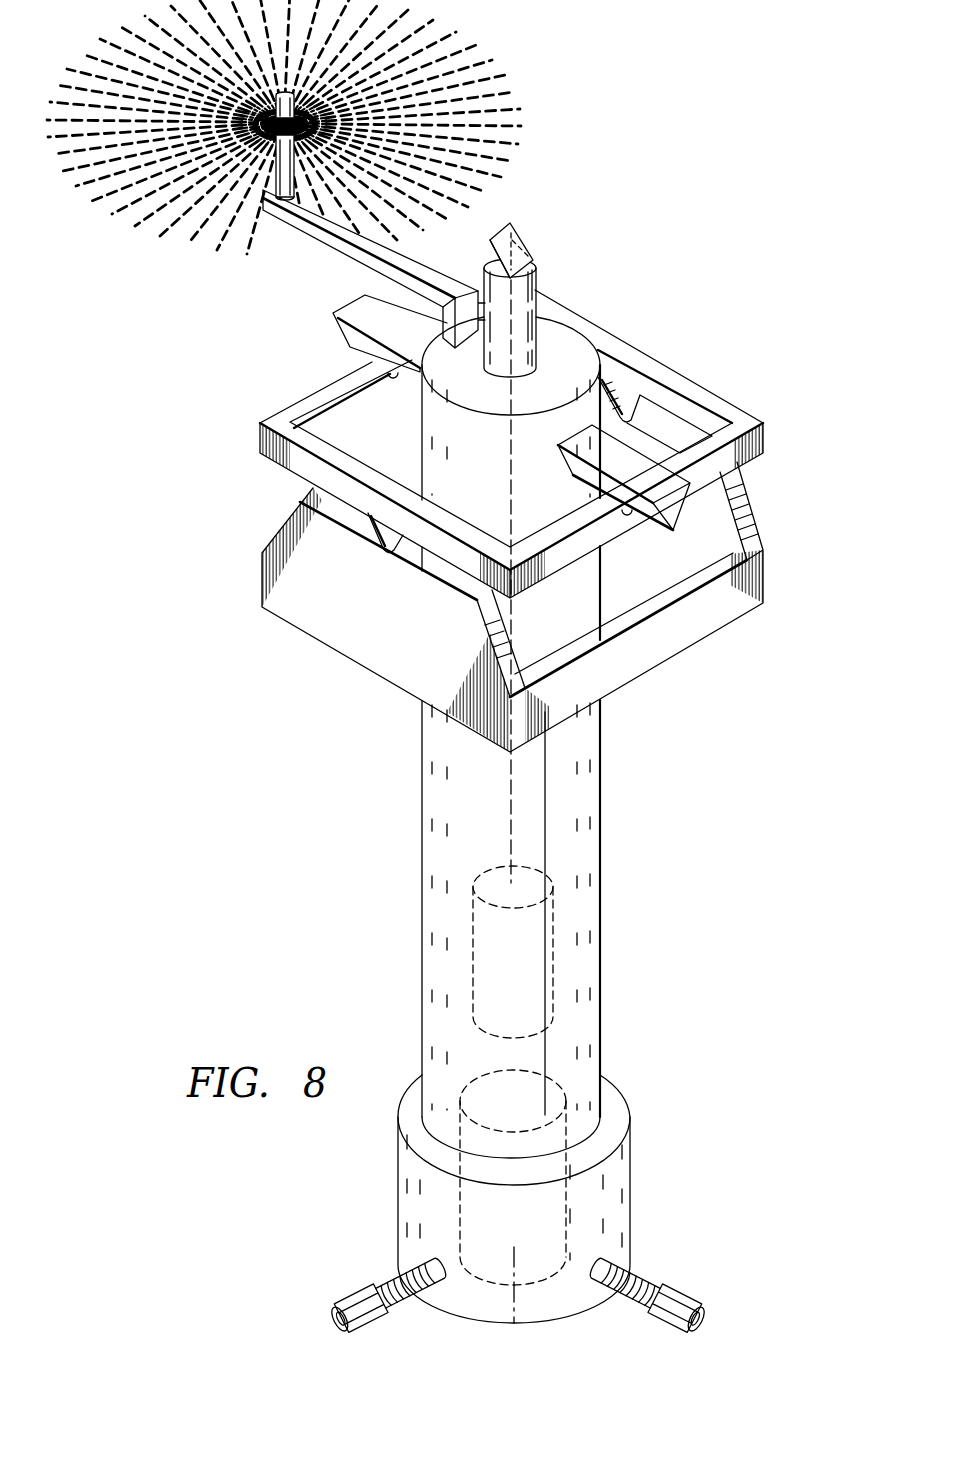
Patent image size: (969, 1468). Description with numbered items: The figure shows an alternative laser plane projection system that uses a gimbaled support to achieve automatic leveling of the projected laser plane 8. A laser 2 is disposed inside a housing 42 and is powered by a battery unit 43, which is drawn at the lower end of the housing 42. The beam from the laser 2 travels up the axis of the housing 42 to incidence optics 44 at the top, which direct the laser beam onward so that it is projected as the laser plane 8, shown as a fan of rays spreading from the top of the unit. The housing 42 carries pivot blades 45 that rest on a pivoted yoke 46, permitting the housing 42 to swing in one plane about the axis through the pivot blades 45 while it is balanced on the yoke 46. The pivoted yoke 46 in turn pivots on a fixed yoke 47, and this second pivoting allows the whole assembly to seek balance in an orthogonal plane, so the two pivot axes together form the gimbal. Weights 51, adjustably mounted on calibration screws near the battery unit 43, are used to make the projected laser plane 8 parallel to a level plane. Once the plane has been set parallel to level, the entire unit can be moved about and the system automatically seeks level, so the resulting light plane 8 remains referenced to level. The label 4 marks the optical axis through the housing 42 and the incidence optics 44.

The projected laser plane 8 is at (527, 80).
The optical axis 4 is at (487, 232).
The incidence optics 44 is at (523, 253).
The pivot blades 45 is at (642, 462).
The pivoted yoke 46 is at (760, 440).
The fixed yoke 47 is at (268, 576).
The housing 42 is at (597, 780).
The laser 2 is at (496, 878).
The battery unit 43 is at (565, 1075).
The weights 51 is at (360, 1293).